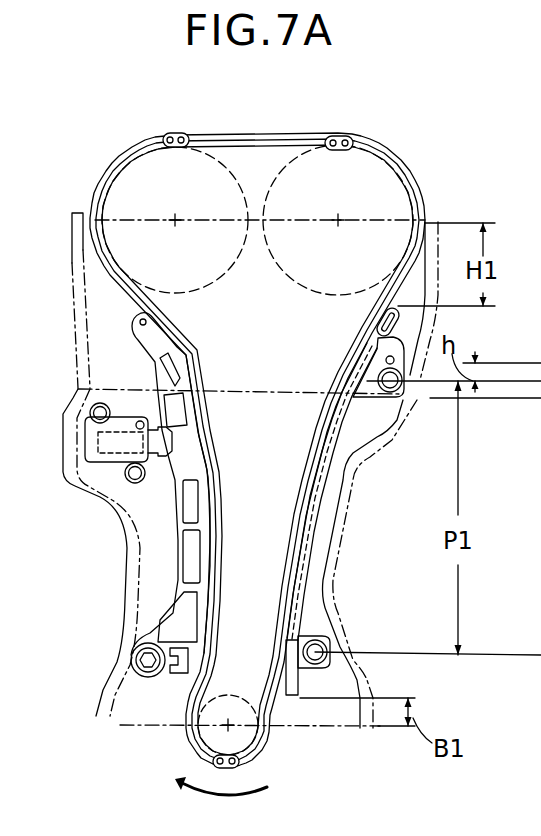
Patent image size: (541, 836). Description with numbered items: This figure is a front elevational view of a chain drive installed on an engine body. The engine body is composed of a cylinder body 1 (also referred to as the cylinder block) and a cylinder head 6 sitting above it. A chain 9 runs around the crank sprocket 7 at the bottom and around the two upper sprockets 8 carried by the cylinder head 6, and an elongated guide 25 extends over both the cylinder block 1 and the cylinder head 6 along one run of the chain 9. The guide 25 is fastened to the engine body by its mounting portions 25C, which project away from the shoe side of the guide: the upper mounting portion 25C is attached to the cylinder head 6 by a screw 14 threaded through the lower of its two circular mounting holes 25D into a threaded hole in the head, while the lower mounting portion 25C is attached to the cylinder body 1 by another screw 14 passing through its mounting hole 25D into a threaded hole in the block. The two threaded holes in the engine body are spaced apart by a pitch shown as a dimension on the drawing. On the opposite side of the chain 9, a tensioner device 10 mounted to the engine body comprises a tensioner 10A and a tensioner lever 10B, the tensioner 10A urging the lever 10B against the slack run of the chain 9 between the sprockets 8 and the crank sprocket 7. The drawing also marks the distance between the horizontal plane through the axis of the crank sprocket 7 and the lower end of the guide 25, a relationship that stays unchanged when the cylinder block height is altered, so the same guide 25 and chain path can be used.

The cylinder body 1 is at (117, 658).
The cylinder head 6 is at (70, 267).
The crank sprocket 7 is at (237, 737).
The camshaft sprocket 8 is at (147, 173).
The chain 9 is at (385, 153).
The tensioner device 10 is at (62, 438).
The tensioner 10A is at (126, 483).
The tensioner lever 10B is at (178, 567).
The screw 14 is at (395, 398).
The guide 25 is at (312, 555).
The mounting portion 25C is at (368, 398).
The mounting hole 25D is at (400, 320).